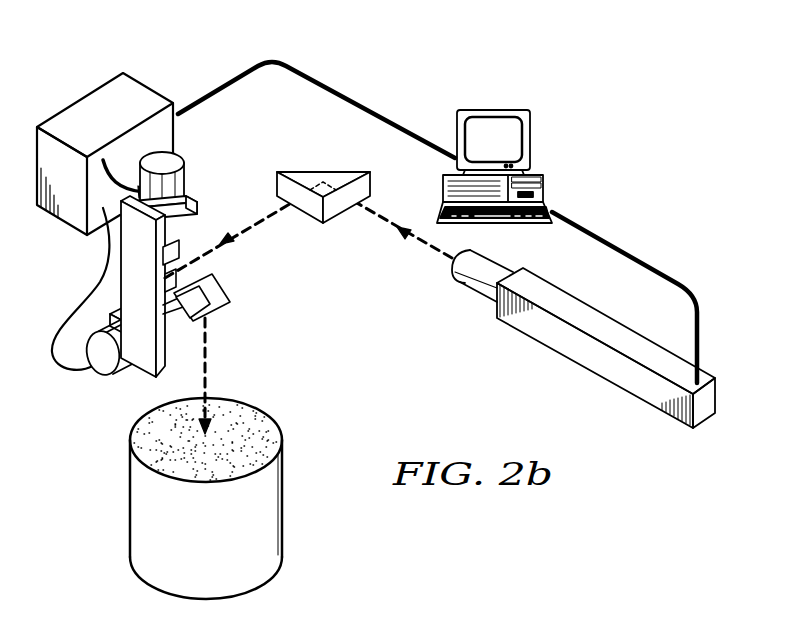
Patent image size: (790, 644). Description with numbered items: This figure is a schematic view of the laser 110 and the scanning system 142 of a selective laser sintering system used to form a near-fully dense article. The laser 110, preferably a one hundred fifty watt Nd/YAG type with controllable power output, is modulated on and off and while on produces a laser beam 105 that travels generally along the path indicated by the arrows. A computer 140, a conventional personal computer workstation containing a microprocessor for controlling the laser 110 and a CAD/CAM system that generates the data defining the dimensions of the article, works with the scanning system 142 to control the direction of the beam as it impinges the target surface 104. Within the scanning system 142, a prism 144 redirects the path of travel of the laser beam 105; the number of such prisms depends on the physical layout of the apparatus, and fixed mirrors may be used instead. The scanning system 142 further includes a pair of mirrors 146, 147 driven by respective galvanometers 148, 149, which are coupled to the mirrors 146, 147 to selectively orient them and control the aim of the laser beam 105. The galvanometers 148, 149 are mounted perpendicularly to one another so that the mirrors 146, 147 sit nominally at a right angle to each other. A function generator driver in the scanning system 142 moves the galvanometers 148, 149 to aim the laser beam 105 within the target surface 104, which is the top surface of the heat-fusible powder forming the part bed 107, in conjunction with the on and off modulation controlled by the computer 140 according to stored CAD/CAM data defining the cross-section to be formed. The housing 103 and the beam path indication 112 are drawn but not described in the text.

The laser power supply / controller housing 103 is at (67, 113).
The scanning system 142 is at (176, 50).
The galvanometer 148 is at (172, 157).
The mirror 146 is at (178, 255).
The prism 144 is at (321, 175).
The computer 140 is at (501, 110).
The laser beam 112 is at (240, 277).
The mirror 147 is at (222, 303).
The laser beam 105 is at (208, 355).
The target surface 104 is at (274, 424).
The part bed 107 is at (288, 514).
The laser 110 is at (570, 350).
The galvanometer 149 is at (104, 376).